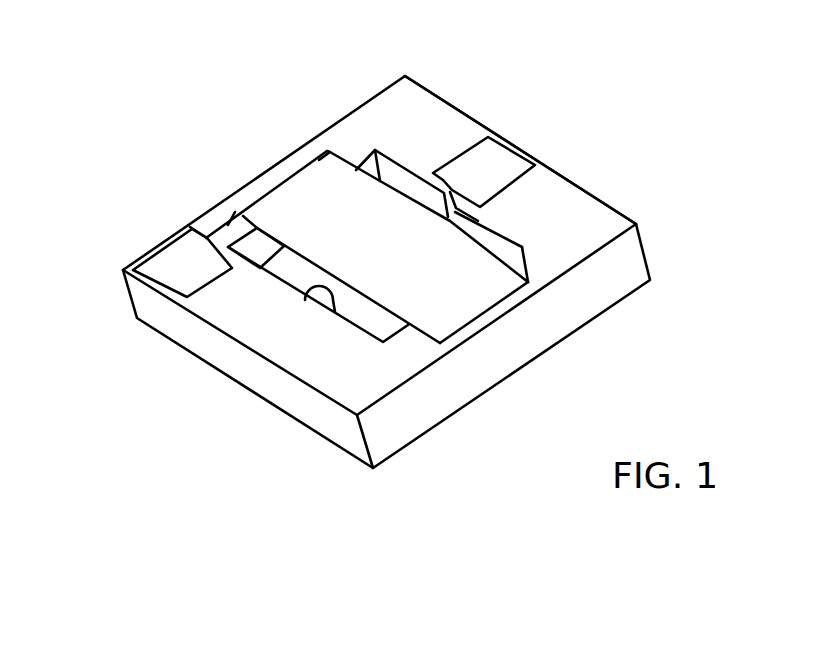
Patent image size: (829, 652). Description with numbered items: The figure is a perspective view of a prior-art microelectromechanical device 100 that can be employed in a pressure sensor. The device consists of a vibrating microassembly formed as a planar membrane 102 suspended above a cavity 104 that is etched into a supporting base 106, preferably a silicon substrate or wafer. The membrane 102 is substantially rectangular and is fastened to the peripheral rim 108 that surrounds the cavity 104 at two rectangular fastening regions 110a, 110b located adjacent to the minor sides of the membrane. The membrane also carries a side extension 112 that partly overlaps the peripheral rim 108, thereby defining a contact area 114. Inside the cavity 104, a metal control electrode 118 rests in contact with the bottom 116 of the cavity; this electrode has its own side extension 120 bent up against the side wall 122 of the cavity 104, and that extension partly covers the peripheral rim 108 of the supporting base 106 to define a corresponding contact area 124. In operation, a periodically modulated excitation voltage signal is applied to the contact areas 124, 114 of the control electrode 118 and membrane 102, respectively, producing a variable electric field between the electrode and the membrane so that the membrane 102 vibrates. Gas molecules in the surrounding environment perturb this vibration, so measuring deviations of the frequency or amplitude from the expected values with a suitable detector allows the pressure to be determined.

The microelectromechanical device 100 is at (415, 253).
The planar membrane 102 is at (311, 198).
The cavity 104 is at (395, 173).
The supporting base 106 is at (590, 209).
The peripheral rim 108 is at (333, 304).
The rectangular fastening region 110a is at (452, 305).
The rectangular fastening region 110b is at (333, 160).
The side extension 112 is at (225, 230).
The contact area 114 is at (180, 265).
The bottom 116 is at (283, 260).
The metal control electrode 118 is at (372, 310).
The side extension 120 is at (480, 219).
The side wall 122 is at (583, 223).
The contact area 124 is at (490, 163).